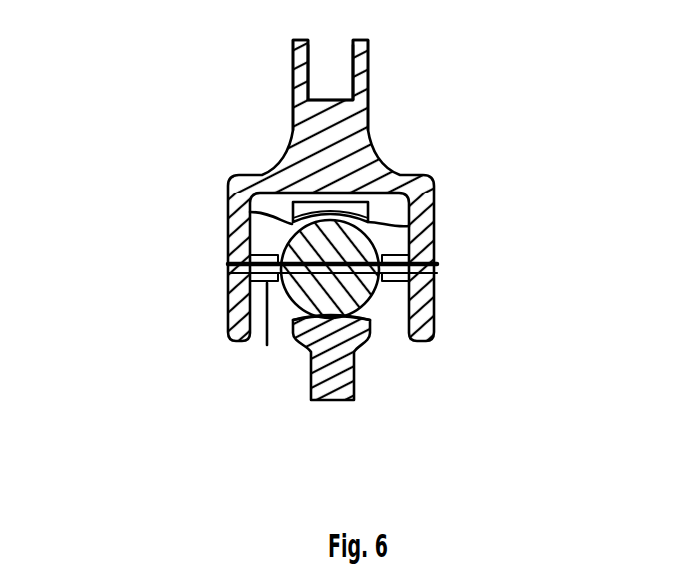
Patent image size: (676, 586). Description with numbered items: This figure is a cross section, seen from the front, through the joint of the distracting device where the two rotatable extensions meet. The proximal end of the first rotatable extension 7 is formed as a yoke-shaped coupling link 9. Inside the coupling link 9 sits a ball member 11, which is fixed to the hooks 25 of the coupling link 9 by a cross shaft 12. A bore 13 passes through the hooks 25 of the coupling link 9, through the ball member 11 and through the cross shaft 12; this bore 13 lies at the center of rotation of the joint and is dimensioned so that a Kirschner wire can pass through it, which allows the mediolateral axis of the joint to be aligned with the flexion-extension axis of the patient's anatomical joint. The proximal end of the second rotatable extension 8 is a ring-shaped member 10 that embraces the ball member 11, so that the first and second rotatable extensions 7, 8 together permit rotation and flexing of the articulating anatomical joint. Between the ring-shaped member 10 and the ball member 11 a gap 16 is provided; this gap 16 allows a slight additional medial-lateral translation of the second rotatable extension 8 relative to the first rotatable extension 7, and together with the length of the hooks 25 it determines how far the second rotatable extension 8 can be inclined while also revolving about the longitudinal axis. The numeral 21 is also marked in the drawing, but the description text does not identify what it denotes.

The first rotatable extension 7 is at (367, 105).
The second rotatable extension 8 is at (333, 387).
The coupling link 9 is at (430, 178).
The ring-shaped member 10 is at (310, 207).
The ball member 11 is at (305, 237).
The cross shaft 12 is at (267, 345).
The bore 13 is at (434, 268).
The gap 16 is at (409, 226).
The bore 21 is at (343, 72).
The hooks 25 is at (434, 301).